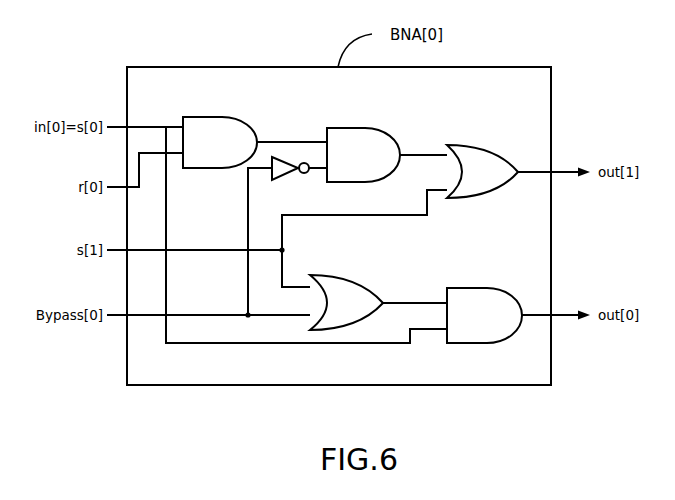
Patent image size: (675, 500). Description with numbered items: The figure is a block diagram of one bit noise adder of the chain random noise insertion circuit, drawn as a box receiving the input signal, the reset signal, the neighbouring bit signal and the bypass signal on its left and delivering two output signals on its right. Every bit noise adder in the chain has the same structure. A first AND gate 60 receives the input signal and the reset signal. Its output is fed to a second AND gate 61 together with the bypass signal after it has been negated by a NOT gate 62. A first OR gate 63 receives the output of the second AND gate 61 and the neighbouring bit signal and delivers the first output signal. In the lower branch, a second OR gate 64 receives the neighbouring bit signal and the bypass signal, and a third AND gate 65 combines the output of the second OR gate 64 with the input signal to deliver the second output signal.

The first AND gate 60 is at (213, 117).
The second AND gate 61 is at (351, 128).
The NOT gate 62 is at (284, 176).
The first OR gate 63 is at (476, 147).
The second OR gate 64 is at (351, 277).
The third AND gate 65 is at (472, 289).